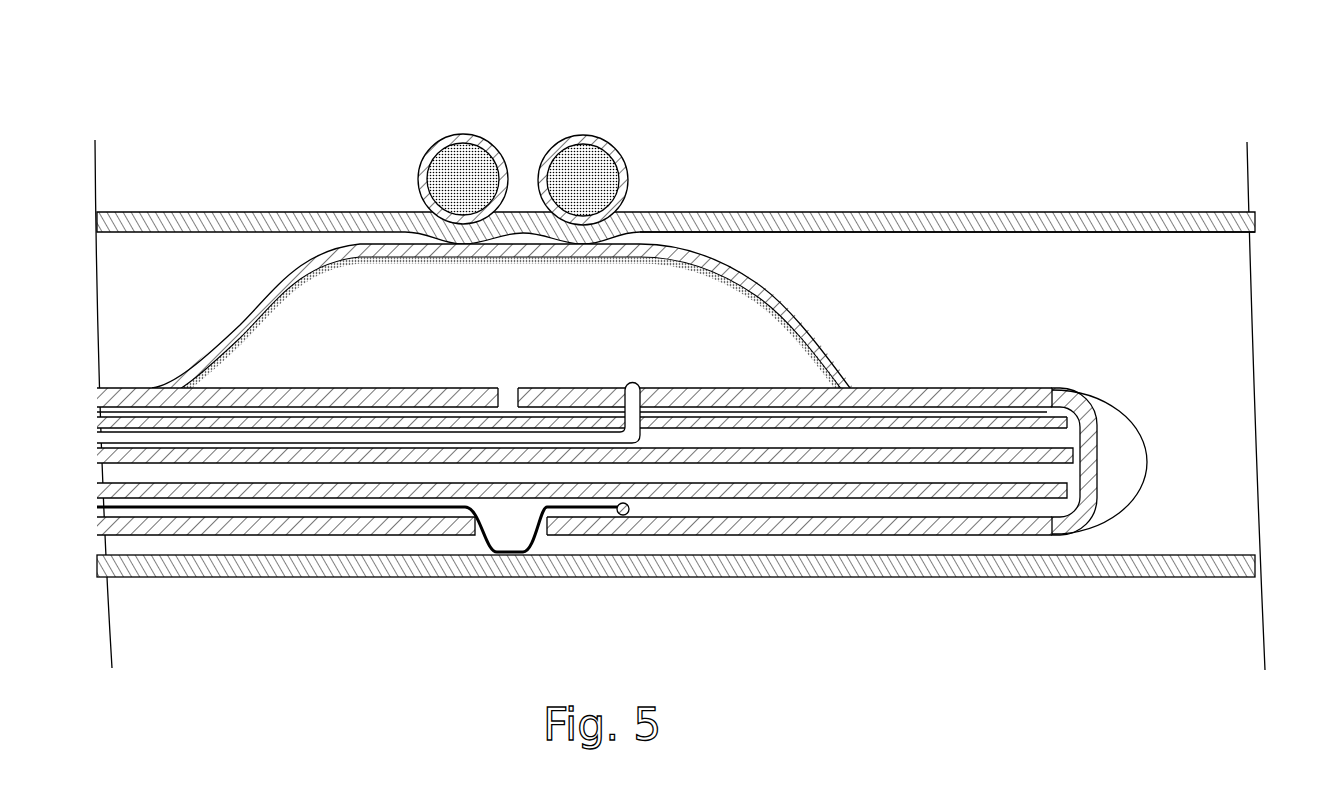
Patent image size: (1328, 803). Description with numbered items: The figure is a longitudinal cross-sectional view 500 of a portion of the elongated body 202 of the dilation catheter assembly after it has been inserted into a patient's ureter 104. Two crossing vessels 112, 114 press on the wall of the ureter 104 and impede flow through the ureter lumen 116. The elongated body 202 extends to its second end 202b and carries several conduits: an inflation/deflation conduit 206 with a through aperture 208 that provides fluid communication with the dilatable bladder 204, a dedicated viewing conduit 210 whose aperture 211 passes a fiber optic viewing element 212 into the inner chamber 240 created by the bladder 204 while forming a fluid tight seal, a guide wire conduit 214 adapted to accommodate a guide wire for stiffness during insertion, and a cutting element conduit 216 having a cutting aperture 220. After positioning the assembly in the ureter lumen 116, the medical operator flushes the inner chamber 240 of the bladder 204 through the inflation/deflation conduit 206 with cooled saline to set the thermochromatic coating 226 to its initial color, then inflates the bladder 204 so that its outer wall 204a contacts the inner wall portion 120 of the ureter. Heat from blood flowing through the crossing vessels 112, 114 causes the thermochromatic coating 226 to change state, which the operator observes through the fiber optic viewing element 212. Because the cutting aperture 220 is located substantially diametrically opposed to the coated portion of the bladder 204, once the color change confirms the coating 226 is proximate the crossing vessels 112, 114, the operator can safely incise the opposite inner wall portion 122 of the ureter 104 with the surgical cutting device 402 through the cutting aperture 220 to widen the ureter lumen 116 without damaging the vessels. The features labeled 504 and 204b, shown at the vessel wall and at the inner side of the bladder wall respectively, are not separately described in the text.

The longitudinal cross-sectional view 500 is at (932, 66).
The ureter 104 is at (181, 205).
The crossing vessel 114 is at (478, 136).
The crossing vessel 112 is at (598, 137).
The treatment site of vessel wall 504 is at (930, 212).
The inner wall portion 120 is at (1024, 240).
The ureter lumen 116 is at (1242, 266).
The dilatable bladder 204 is at (526, 321).
The outer wall of the bladder 204a is at (815, 335).
The balloon inner layer 204b is at (795, 328).
The thermochromatic coating 226 is at (650, 280).
The inner chamber 240 is at (387, 379).
The through aperture 208 is at (507, 394).
The fiber optic viewing element 212 is at (633, 380).
The aperture 211 is at (641, 432).
The inflation/deflation conduit 206 is at (970, 412).
The dedicated viewing conduit 210 is at (1038, 442).
The second end of the elongated body 202b is at (1062, 378).
The elongated body 202 is at (622, 464).
The guide wire conduit 214 is at (947, 476).
The cutting element conduit 216 is at (655, 510).
The cutting aperture 220 is at (542, 528).
The surgical cutting device 402 is at (203, 508).
The inner wall portion 122 is at (443, 552).